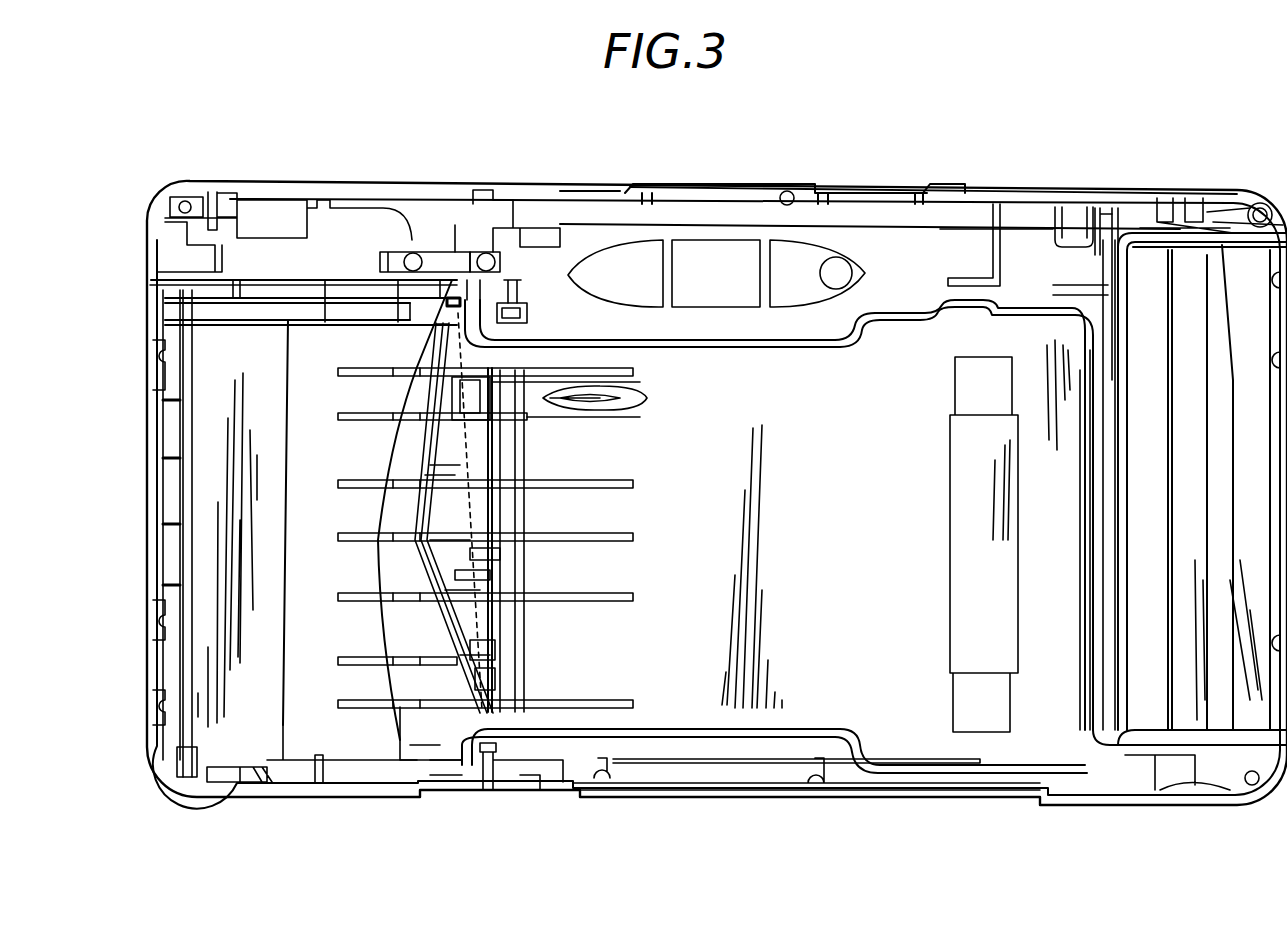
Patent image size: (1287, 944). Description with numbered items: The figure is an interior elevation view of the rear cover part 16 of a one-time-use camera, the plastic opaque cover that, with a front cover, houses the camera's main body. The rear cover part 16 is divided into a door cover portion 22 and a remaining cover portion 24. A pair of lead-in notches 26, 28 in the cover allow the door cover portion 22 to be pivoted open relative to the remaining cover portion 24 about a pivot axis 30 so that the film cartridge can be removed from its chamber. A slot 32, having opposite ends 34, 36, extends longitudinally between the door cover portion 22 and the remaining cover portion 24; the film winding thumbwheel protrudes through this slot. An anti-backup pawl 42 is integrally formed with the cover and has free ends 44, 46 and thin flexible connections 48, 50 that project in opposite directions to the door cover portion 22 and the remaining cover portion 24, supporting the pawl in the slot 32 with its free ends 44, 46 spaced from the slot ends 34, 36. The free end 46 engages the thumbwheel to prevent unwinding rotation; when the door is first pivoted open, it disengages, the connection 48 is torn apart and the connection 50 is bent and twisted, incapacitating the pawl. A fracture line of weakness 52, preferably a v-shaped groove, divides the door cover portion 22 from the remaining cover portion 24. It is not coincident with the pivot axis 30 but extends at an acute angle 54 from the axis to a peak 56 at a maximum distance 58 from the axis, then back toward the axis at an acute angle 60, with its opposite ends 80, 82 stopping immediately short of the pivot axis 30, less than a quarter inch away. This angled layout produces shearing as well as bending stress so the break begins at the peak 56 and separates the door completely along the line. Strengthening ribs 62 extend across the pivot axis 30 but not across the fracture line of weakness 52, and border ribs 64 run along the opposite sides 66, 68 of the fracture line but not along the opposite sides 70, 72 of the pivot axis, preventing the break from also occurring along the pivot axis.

The rear cover part 16 is at (448, 176).
The door cover portion 22 is at (250, 797).
The remaining cover portion 24 is at (647, 797).
The lead-in notch 26 is at (522, 293).
The lead-in notch 28 is at (500, 768).
The pivot axis 30 is at (487, 622).
The slot 32 is at (293, 260).
The slot end 34 is at (535, 215).
The slot end 36 is at (152, 275).
The anti-backup pawl 42 is at (410, 253).
The free end 44 is at (568, 278).
The free end 46 is at (375, 255).
The thin flexible connection 48 is at (455, 250).
The thin flexible connection 50 is at (457, 297).
The fracture line of weakness 52 is at (430, 467).
The acute angle 54 is at (467, 427).
The peak 56 is at (423, 533).
The maximum distance 58 is at (500, 556).
The acute angle 60 is at (495, 650).
The strengthening ribs 62 is at (485, 490).
The border ribs 64 is at (543, 398).
The side of fracture line of weakness 66 is at (500, 673).
The side of fracture line of weakness 68 is at (480, 655).
The side of pivot axis 70 is at (490, 583).
The side of pivot axis 72 is at (460, 583).
The end of fracture line of weakness 80 is at (527, 320).
The end of fracture line of weakness 82 is at (482, 713).